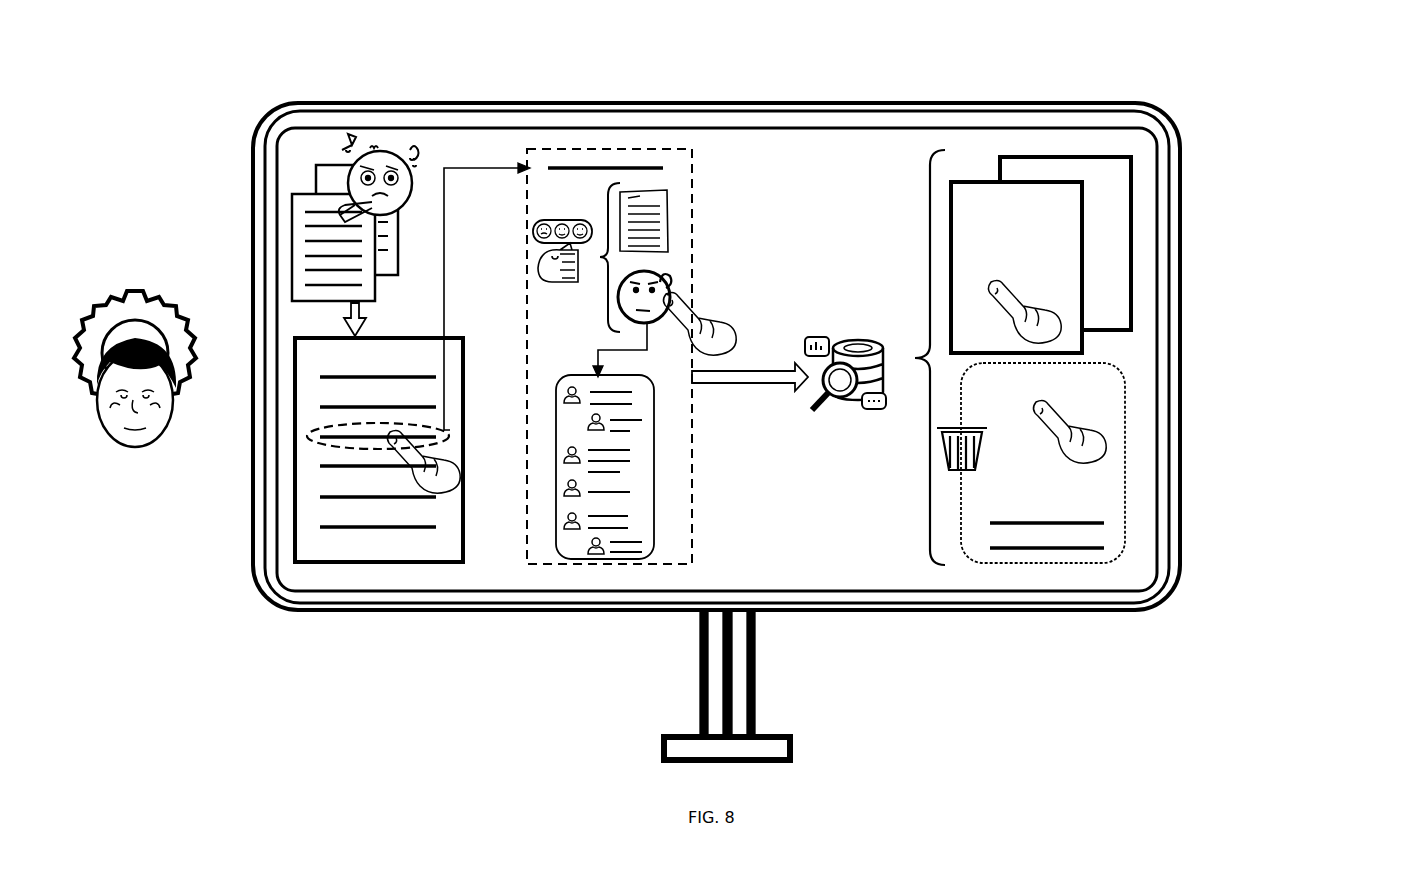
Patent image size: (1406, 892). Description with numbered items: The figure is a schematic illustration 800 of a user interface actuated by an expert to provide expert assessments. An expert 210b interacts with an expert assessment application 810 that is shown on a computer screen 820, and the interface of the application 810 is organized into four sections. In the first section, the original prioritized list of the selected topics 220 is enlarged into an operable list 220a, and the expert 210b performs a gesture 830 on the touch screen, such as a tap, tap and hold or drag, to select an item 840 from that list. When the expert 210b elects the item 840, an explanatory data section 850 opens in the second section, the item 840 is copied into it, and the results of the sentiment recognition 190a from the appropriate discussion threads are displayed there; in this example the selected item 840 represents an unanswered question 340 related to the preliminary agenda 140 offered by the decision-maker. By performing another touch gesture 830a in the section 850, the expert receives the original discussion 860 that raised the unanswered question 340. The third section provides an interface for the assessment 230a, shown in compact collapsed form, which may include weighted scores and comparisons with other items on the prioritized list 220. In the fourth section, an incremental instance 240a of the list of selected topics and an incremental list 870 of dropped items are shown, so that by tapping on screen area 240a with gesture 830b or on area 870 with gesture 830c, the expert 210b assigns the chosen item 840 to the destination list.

The schematic illustration 800 is at (1393, 102).
The expert assessment application 810 is at (277, 186).
The computer screen 820 is at (1181, 145).
The expert 210b is at (97, 412).
The prioritized list of selected topics 220 is at (293, 220).
The operable list 220a is at (292, 445).
The selected item 840 is at (412, 432).
The gesture 830 is at (445, 460).
The explanatory data section 850 is at (527, 162).
The sentiment recognition 190a is at (533, 232).
The preliminary agenda 140 is at (672, 213).
The unanswered question 340 is at (668, 290).
The touch gesture 830a is at (713, 345).
The original discussion 860 is at (656, 462).
The assessment interface 230a is at (857, 340).
The incremental instance of the list of selected topics 240a is at (1040, 186).
The gesture 830b is at (1060, 318).
The incremental list of dropped items 870 is at (1120, 373).
The gesture 830c is at (1100, 436).